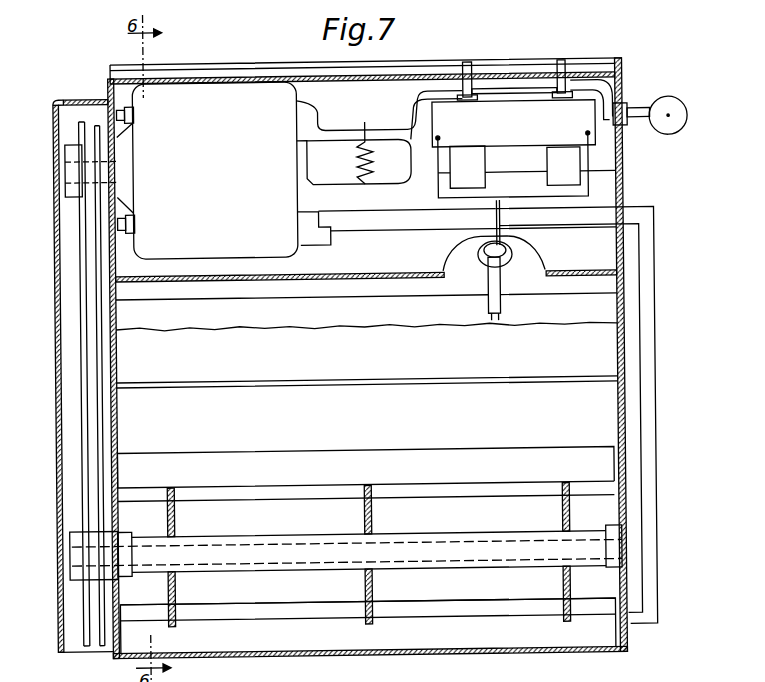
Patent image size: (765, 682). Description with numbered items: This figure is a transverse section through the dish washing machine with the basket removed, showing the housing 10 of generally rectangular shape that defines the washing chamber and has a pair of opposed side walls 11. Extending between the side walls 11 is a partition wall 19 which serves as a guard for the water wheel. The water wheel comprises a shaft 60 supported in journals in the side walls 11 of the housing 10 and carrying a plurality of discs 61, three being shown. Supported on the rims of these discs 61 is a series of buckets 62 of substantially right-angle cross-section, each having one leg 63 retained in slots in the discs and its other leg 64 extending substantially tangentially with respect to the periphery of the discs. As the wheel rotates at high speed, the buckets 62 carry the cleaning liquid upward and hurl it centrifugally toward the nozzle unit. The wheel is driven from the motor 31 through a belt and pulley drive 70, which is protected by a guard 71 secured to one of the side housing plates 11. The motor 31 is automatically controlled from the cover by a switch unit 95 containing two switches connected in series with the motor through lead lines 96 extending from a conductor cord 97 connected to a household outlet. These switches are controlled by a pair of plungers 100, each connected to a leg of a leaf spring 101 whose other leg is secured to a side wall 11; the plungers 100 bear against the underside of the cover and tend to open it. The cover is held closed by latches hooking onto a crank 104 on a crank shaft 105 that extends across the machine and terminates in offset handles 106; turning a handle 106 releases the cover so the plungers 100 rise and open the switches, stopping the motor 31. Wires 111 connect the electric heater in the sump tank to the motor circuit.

The housing 10 is at (634, 385).
The side walls 11 is at (618, 405).
The partition wall 19 is at (342, 391).
The motor 31 is at (222, 92).
The shaft 60 is at (497, 541).
The discs 61 is at (175, 512).
The buckets 62 is at (270, 472).
The leg 63 is at (498, 492).
The leg 64 is at (425, 457).
The belt and pulley drive 70 is at (76, 277).
The guard 71 is at (56, 340).
The switch unit 95 is at (525, 132).
The lead lines 96 is at (382, 215).
The conductor cord 97 is at (487, 304).
The plungers 100 is at (468, 68).
The leaf spring 101 is at (553, 175).
The crank 104 is at (517, 86).
The crank shaft 105 is at (420, 110).
The offset handles 106 is at (675, 106).
The wires 111 is at (640, 252).